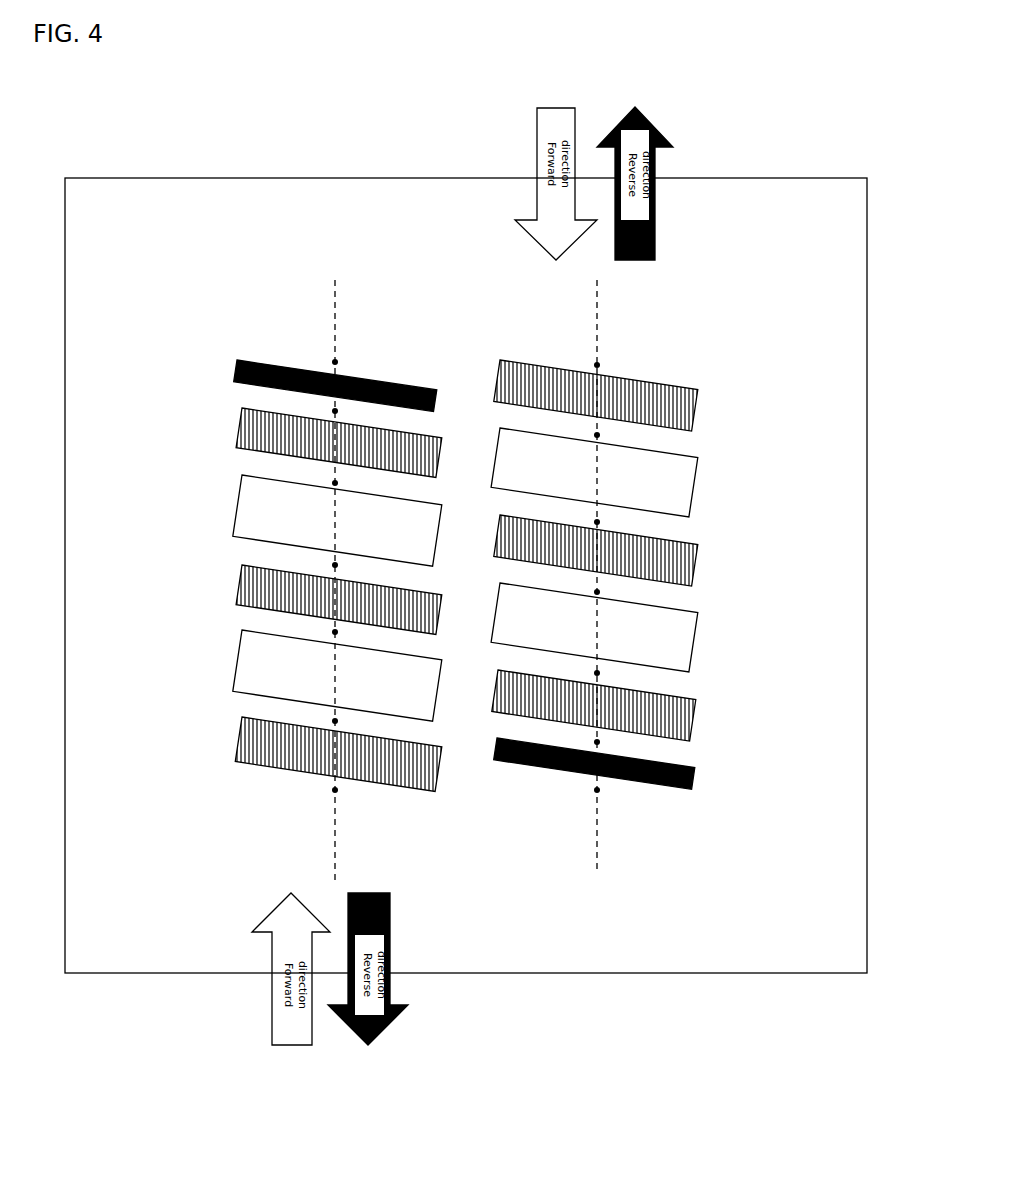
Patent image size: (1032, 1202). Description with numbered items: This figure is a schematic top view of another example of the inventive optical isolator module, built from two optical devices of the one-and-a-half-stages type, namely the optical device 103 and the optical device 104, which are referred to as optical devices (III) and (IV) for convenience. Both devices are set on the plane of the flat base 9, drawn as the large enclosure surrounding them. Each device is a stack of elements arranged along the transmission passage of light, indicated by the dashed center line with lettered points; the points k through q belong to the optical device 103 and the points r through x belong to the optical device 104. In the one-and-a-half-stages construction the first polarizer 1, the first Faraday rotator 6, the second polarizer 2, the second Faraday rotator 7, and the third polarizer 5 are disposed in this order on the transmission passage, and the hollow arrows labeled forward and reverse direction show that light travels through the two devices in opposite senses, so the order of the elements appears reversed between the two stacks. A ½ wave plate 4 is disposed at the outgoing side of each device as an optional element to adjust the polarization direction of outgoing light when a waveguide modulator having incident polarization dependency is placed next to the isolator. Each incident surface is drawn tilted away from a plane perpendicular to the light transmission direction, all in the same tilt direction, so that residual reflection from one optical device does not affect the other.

The first polarizer 1 is at (237, 740).
The second polarizer 2 is at (237, 578).
The ½ wave plate 4 is at (237, 365).
The third polarizer 5 is at (237, 427).
The first Faraday rotator 6 is at (237, 660).
The second Faraday rotator 7 is at (237, 502).
The flat base 9 is at (100, 923).
The optical device 103 is at (453, 1065).
The optical device 104 is at (468, 1065).